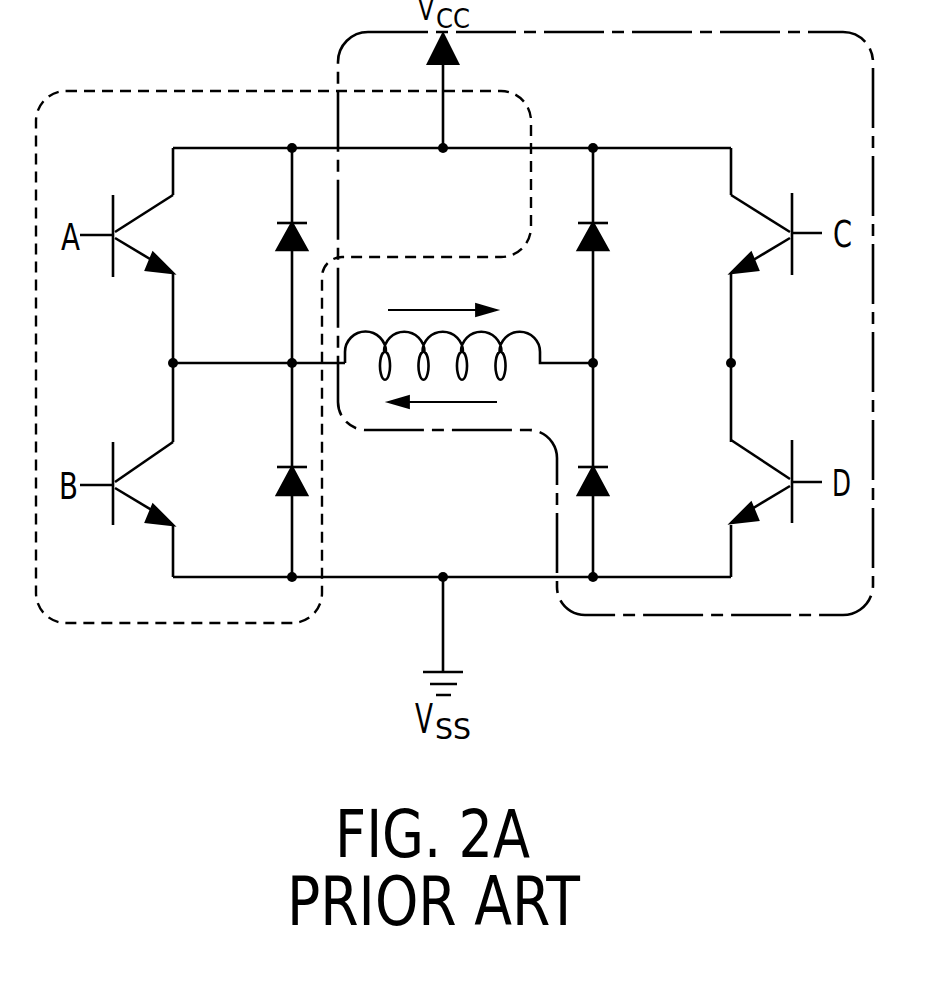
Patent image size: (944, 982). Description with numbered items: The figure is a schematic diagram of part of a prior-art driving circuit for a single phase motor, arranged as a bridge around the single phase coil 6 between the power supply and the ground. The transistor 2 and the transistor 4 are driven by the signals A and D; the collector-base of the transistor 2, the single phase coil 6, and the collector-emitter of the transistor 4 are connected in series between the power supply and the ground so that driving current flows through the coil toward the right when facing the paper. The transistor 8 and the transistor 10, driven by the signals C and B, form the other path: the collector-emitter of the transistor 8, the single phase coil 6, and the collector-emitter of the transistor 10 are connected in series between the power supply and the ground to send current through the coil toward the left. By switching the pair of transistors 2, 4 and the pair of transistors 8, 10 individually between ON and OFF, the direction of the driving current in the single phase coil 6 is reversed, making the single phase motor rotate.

The transistor 2 is at (153, 207).
The transistor 4 is at (763, 502).
The single phase coil 6 is at (533, 340).
The transistor 8 is at (752, 206).
The transistor 10 is at (140, 505).